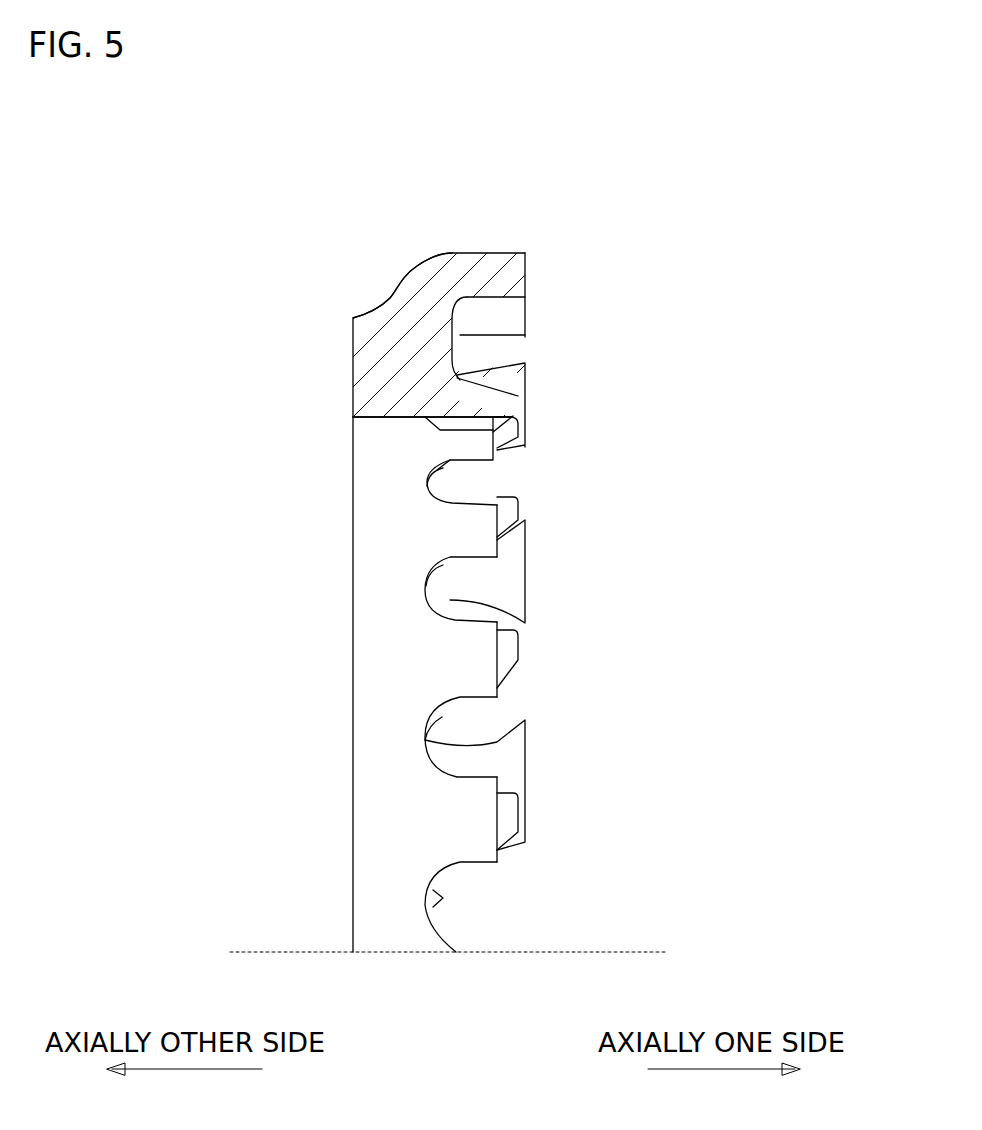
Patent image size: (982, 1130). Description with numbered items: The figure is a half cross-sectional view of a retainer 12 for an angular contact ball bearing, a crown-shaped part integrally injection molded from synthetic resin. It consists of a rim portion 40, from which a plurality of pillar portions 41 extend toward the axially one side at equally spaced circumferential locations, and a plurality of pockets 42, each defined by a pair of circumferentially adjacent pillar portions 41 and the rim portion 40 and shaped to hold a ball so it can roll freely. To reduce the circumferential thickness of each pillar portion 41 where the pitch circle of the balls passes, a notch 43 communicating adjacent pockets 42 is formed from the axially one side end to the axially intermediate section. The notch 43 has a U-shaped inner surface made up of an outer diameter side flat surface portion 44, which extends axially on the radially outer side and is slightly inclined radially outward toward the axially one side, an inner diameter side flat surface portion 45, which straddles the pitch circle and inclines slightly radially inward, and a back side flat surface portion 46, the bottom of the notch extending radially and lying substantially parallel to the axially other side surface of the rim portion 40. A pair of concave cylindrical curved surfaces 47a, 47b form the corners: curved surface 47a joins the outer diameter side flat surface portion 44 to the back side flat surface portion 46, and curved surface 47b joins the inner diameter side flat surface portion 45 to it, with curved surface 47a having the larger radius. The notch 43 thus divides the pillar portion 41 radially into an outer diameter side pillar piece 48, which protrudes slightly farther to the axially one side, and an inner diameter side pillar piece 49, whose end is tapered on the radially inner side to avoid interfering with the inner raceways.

The retainer for an angular contact ball bearing 12 is at (560, 240).
The rim portion 40 is at (362, 357).
The pillar portion 41 is at (518, 250).
The pocket 42 is at (450, 490).
The notch 43 is at (527, 303).
The outer diameter side flat surface portion 44 is at (530, 318).
The inner diameter side flat surface portion 45 is at (526, 368).
The back side flat surface portion 46 is at (465, 337).
The curved surface 47a is at (470, 302).
The curved surface 47b is at (490, 390).
The outer diameter side pillar piece 48 is at (462, 250).
The inner diameter side pillar piece 49 is at (445, 428).